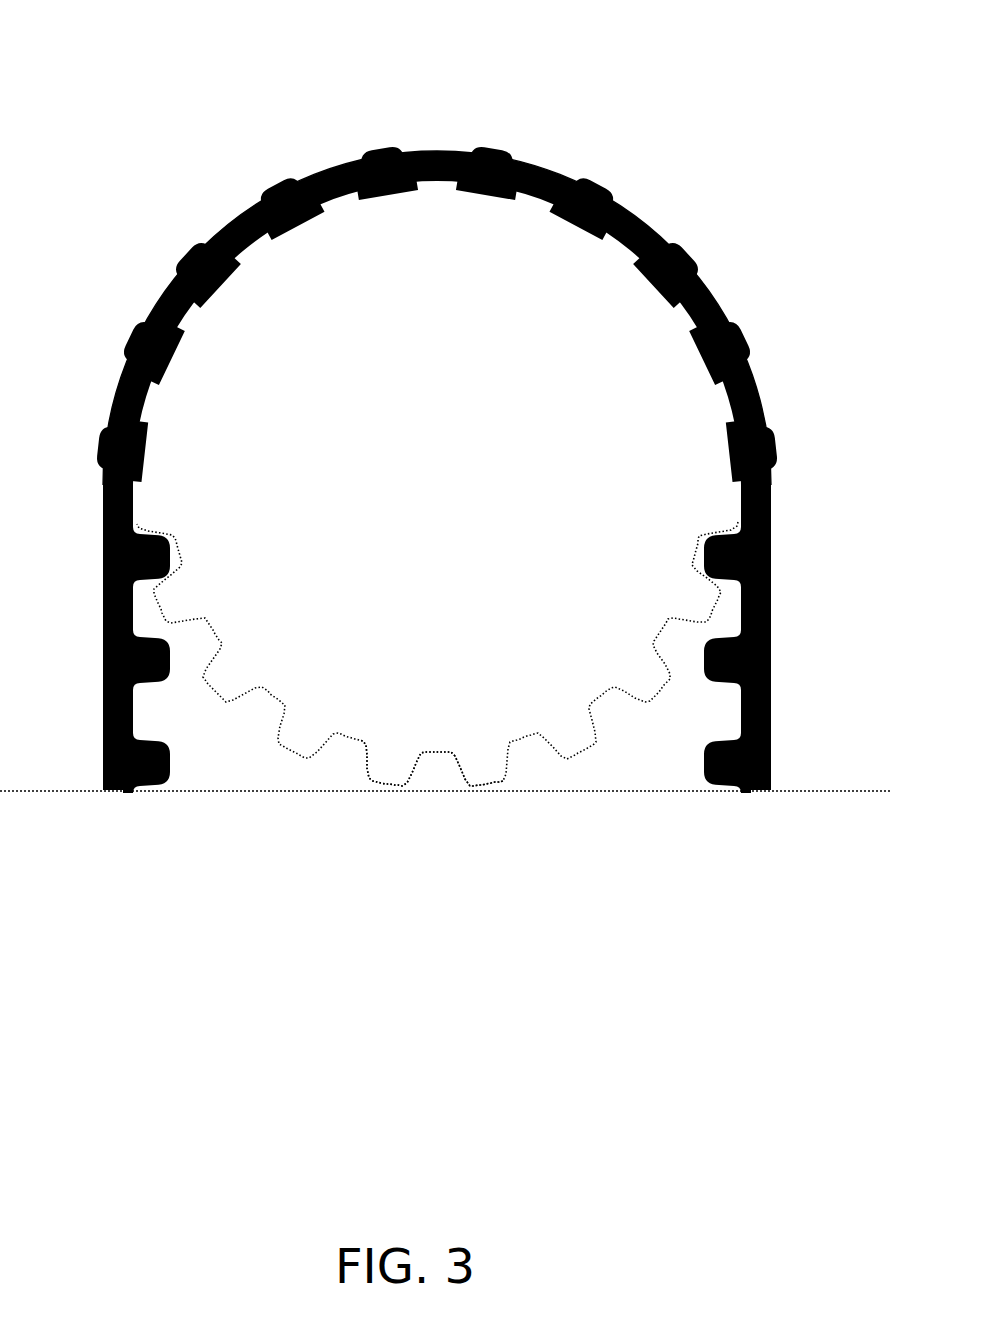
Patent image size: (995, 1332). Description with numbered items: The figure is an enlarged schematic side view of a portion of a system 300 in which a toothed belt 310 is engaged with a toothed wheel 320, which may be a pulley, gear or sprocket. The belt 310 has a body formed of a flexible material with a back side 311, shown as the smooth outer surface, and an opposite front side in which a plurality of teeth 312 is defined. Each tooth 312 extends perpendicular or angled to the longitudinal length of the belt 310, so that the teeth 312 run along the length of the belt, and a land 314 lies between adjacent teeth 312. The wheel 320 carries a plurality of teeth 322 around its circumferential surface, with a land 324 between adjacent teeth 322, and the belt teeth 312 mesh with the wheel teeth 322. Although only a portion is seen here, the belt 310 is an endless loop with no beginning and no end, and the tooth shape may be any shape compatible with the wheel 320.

The system 300 is at (445, 456).
The toothed belt 310 is at (402, 494).
The back side 311 is at (196, 253).
The teeth 312 is at (170, 677).
The land 314 is at (130, 705).
The toothed wheel 320 is at (437, 713).
The teeth 322 is at (463, 782).
The land 324 is at (522, 738).